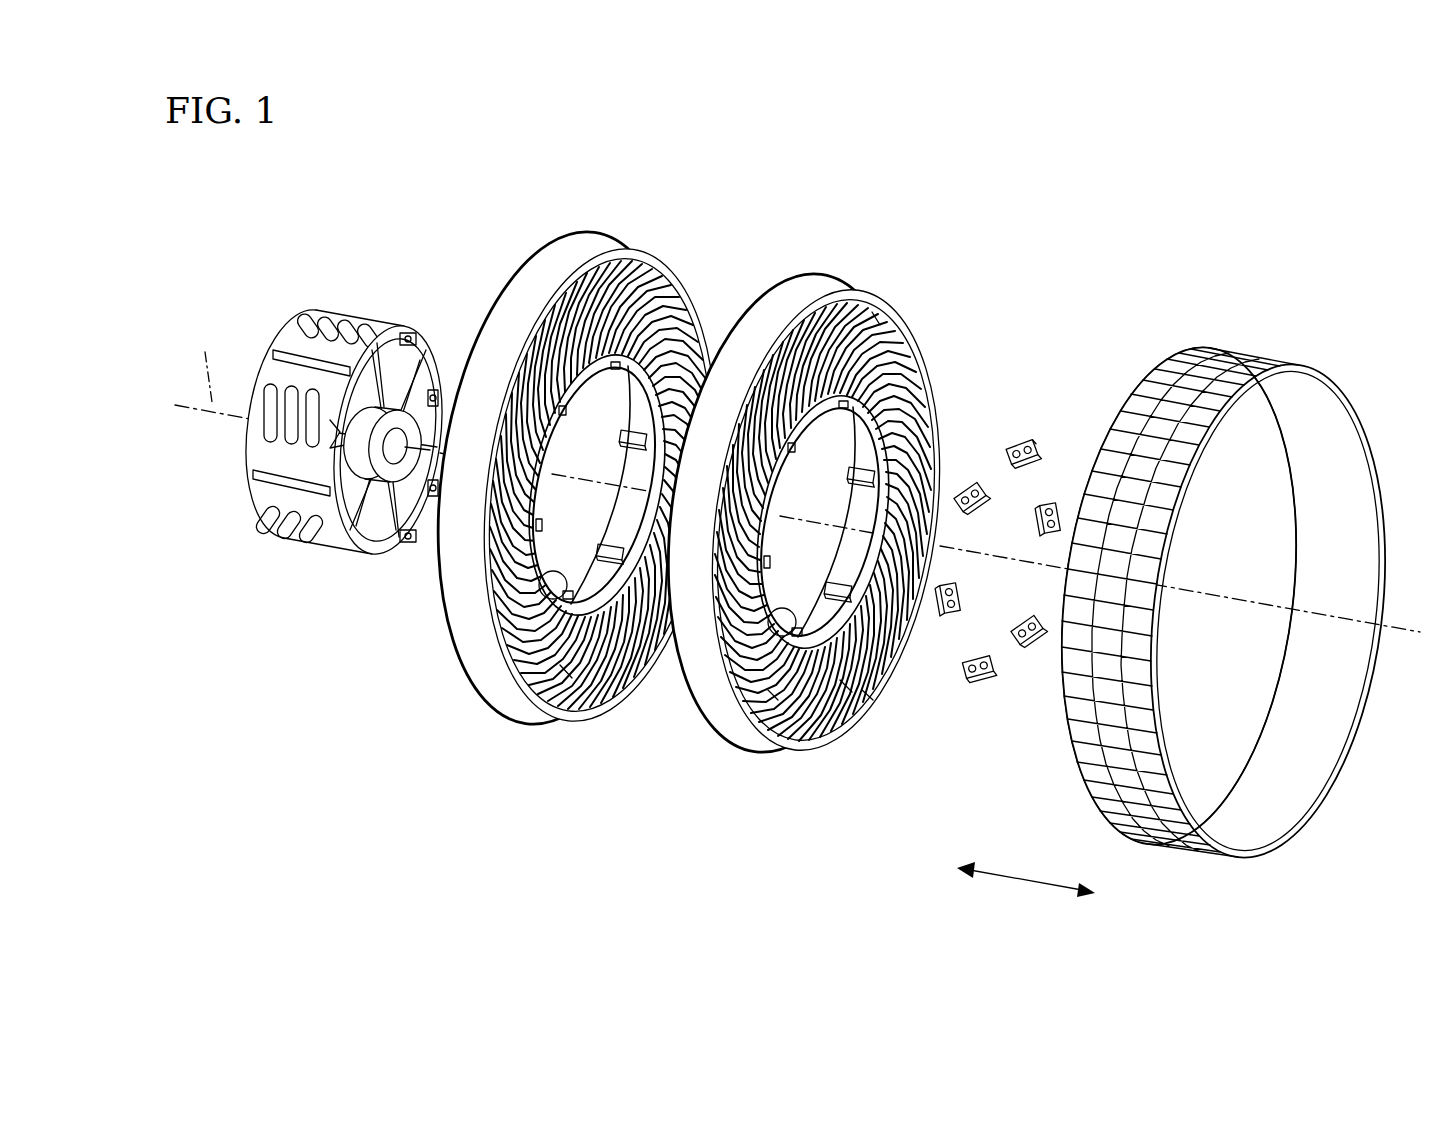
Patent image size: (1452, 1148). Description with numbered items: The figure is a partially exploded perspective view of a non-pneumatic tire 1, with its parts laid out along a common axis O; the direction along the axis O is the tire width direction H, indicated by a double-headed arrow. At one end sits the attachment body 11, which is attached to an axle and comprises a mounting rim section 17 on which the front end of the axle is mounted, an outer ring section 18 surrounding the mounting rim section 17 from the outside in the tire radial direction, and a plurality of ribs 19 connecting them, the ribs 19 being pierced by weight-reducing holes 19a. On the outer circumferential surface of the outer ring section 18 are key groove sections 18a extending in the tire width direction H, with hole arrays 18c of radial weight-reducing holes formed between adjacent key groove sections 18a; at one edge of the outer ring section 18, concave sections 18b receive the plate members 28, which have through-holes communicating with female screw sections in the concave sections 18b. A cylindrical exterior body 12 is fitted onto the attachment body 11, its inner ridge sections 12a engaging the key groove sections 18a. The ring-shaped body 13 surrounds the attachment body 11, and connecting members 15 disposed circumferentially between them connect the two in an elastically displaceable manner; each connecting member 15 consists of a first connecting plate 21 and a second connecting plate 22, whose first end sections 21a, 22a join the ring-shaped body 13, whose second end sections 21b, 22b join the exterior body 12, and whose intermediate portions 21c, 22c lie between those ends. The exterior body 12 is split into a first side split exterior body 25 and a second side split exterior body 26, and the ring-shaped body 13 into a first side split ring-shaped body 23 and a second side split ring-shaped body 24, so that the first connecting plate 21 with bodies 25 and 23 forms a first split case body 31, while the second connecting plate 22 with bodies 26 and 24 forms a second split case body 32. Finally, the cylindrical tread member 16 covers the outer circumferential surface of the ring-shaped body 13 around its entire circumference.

The non-pneumatic tire 1 is at (1162, 185).
The attachment body 11 is at (304, 422).
The exterior body 12 is at (872, 440).
The ridge sections 12a is at (548, 582).
The ring-shaped body 13 is at (945, 368).
The connecting members 15 is at (905, 345).
The tread member 16 is at (1257, 340).
The mounting rim section 17 is at (380, 410).
The outer ring section 18 is at (262, 524).
The key groove sections 18a is at (268, 482).
The concave sections 18b is at (404, 530).
The hole arrays 18c is at (250, 428).
The ribs 19 is at (338, 545).
The weight-reducing holes 19a is at (322, 528).
The first connecting plate 21 is at (880, 325).
The first end section 21a is at (850, 692).
The second end section 21b is at (785, 632).
The intermediate portion 21c is at (773, 700).
The second connecting plate 22 is at (662, 280).
The first end section 22a is at (680, 285).
The second end section 22b is at (612, 385).
The intermediate portion 22c is at (570, 690).
The first side split ring-shaped body 23 is at (848, 275).
The second side split ring-shaped body 24 is at (625, 222).
The first side split exterior body 25 is at (902, 345).
The second side split exterior body 26 is at (664, 395).
The plate members 28 is at (1040, 452).
The first split case body 31 is at (837, 485).
The second split case body 32 is at (589, 457).
The axis O is at (797, 474).
The tire width direction H is at (1026, 888).